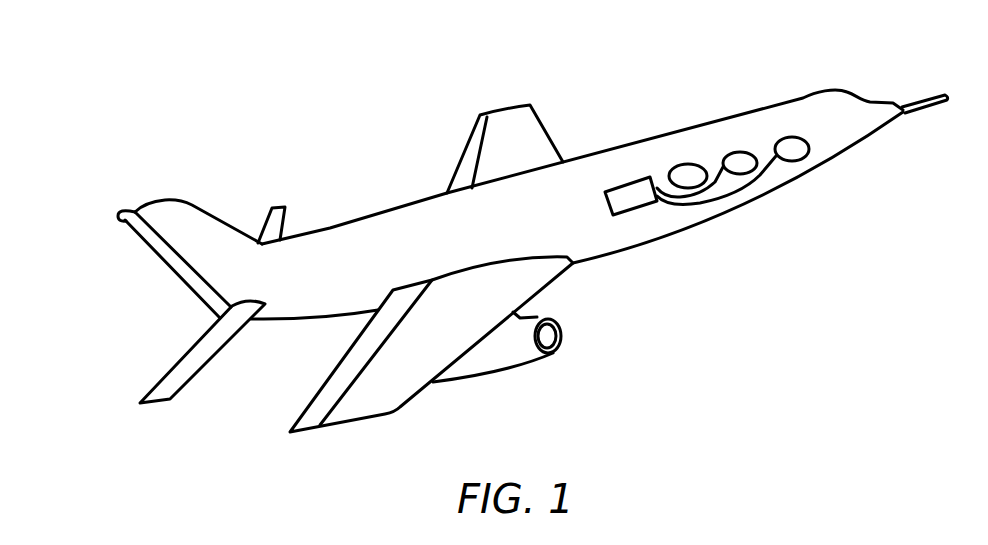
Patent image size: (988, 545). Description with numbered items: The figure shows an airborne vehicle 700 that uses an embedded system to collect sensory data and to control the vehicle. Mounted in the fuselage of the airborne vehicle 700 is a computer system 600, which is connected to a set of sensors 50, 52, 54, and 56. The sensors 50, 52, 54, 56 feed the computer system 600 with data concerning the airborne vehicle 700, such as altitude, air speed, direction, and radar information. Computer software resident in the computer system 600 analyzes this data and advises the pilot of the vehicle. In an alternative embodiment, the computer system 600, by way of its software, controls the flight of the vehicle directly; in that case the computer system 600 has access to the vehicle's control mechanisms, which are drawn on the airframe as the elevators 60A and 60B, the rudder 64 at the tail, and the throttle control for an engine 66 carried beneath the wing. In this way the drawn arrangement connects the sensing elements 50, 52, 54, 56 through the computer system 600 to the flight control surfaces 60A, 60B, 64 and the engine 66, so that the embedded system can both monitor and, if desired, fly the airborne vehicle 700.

The sensor 50 is at (936, 97).
The sensor 52 is at (790, 138).
The sensor 54 is at (732, 153).
The sensor 56 is at (680, 166).
The elevator 60A is at (311, 402).
The elevator 60B is at (466, 148).
The rudder 64 is at (119, 212).
The engine 66 is at (350, 346).
The computer system 600 is at (609, 208).
The airborne vehicle 700 is at (750, 258).